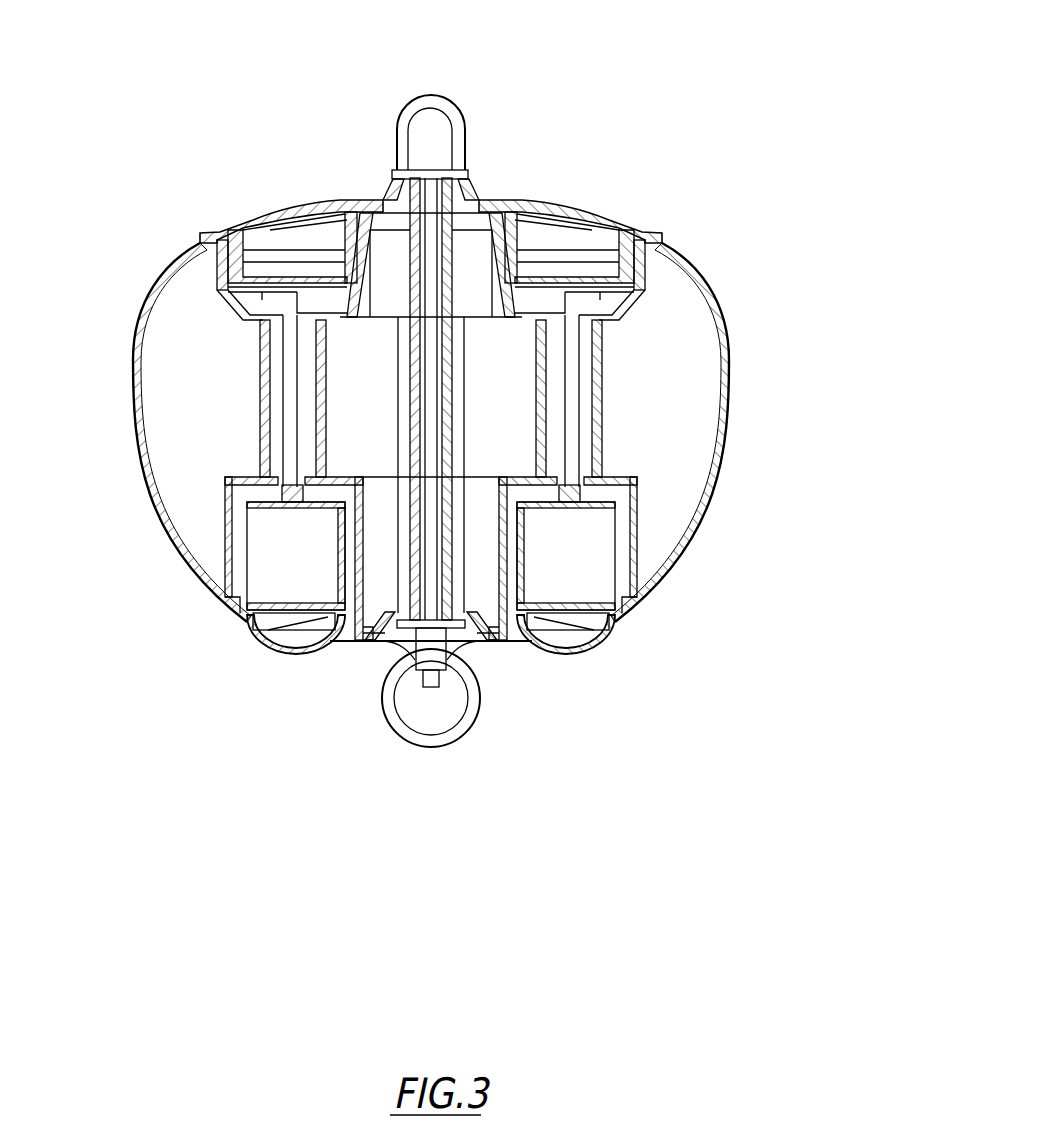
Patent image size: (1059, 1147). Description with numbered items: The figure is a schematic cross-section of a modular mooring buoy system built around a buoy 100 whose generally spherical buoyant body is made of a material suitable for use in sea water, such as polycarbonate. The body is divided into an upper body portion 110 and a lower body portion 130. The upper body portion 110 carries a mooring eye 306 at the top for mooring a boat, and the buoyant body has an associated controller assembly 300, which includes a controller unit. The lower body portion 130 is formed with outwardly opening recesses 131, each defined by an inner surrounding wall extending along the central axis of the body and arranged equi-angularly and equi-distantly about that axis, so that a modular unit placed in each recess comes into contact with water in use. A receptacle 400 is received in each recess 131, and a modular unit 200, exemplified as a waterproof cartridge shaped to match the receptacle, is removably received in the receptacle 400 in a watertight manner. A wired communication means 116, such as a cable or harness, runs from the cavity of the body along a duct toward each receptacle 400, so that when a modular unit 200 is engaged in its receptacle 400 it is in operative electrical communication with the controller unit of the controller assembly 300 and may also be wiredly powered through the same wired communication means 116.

The buoy 100 is at (662, 278).
The upper body portion 110 is at (698, 308).
The wired communication means 116 is at (573, 373).
The lower body portion 130 is at (680, 520).
The recess 131 is at (318, 590).
The modular unit 200 is at (277, 576).
The controller assembly 300 is at (549, 310).
The mooring eye 306 is at (460, 118).
The receptacle 400 is at (532, 668).